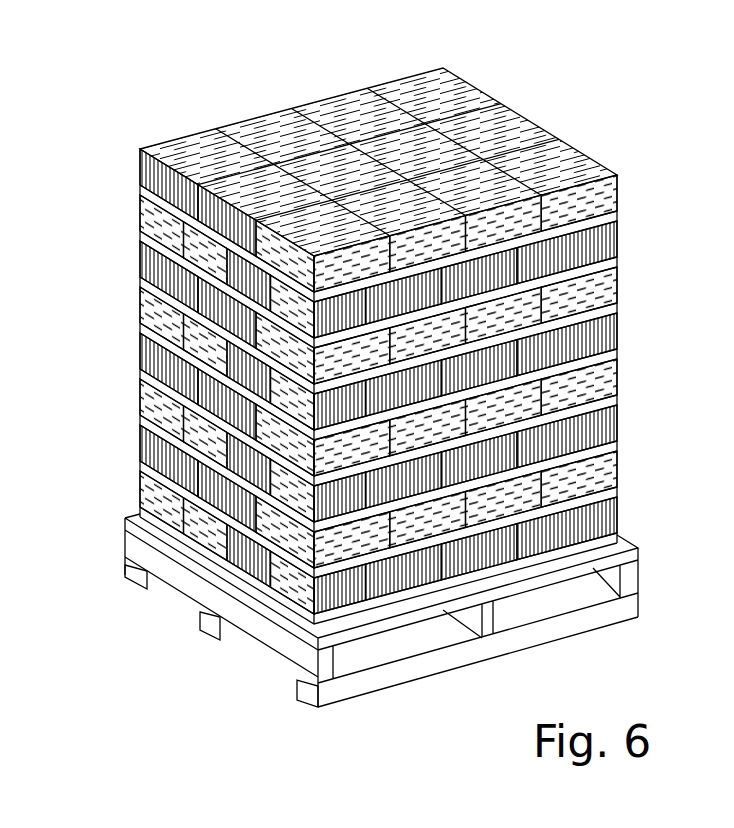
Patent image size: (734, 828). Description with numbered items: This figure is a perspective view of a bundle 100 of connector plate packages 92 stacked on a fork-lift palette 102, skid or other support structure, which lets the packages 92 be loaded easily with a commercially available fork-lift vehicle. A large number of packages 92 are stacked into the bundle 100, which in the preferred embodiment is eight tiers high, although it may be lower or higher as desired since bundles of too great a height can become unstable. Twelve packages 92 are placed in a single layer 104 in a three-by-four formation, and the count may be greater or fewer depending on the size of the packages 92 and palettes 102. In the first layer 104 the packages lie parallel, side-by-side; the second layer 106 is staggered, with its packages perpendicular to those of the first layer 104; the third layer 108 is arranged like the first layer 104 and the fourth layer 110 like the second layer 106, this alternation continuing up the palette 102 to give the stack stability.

The bundle 100 is at (523, 73).
The connector plate package 92 is at (617, 237).
The fork-lift palette 102 is at (433, 662).
The first layer 104 is at (625, 515).
The second layer 106 is at (625, 465).
The third layer 108 is at (625, 423).
The fourth layer 110 is at (625, 373).